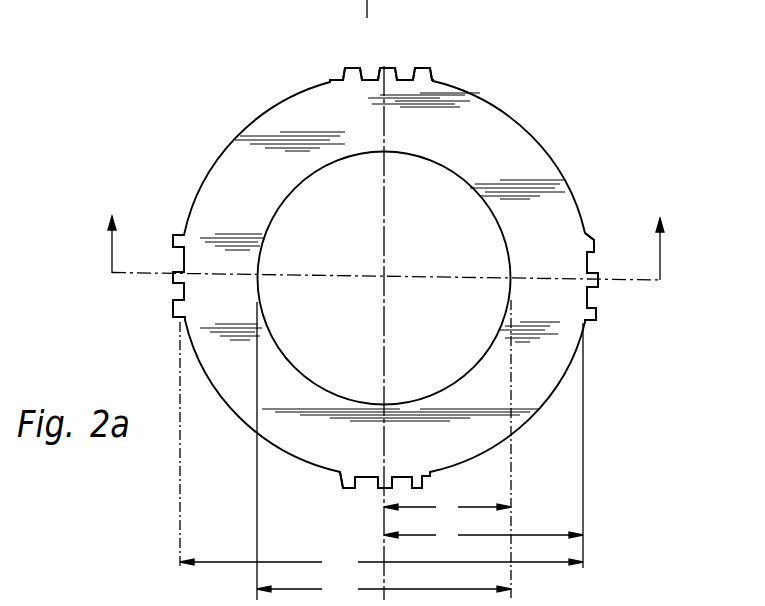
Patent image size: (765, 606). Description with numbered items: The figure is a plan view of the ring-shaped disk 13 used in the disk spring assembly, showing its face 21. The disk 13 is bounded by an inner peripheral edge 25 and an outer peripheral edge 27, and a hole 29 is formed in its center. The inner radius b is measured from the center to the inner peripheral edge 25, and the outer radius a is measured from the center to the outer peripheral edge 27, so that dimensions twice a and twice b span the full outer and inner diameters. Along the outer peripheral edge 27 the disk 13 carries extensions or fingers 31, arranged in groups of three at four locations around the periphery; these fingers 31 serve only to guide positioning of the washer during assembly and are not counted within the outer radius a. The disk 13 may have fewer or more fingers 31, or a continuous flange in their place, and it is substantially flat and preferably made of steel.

The ring-shaped disk 13 is at (563, 154).
The face 21 is at (482, 167).
The inner peripheral edge 25 is at (290, 181).
The outer peripheral edge 27 is at (283, 100).
The hole 29 is at (440, 209).
The fingers 31 is at (423, 66).